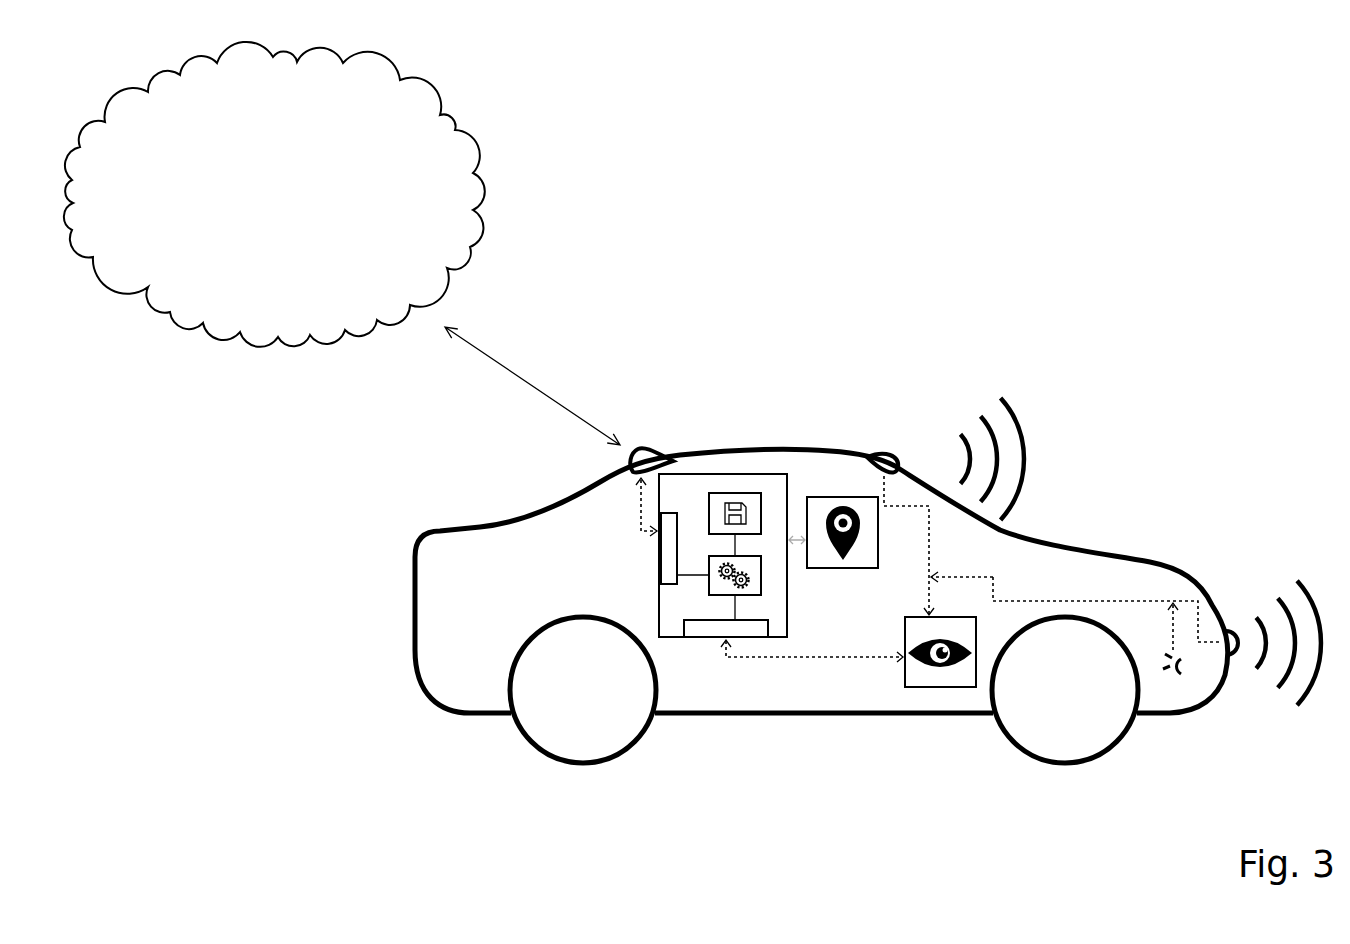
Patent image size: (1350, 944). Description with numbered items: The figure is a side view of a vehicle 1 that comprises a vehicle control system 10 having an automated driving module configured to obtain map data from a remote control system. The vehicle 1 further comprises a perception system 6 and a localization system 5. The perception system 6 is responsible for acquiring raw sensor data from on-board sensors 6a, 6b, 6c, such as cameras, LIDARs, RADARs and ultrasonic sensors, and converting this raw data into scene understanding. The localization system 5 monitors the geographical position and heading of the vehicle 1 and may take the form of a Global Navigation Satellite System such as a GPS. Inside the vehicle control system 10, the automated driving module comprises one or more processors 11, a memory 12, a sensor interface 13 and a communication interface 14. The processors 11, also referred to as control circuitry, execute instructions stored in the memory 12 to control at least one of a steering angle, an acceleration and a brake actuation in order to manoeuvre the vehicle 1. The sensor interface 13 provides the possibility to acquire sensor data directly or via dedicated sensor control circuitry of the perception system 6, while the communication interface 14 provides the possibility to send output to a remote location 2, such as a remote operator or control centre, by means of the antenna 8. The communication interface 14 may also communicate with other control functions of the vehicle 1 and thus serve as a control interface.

The vehicle 1 is at (434, 708).
The remote location 2 is at (418, 84).
The localization system 5 is at (828, 497).
The perception system 6 is at (952, 688).
The sensor 6a is at (1181, 663).
The sensor 6b is at (1230, 633).
The sensor 6c is at (887, 460).
The antenna 8 is at (642, 449).
The vehicle control system 10 is at (712, 472).
The processor 11 is at (762, 582).
The memory 12 is at (735, 492).
The sensor interface 13 is at (710, 632).
The communication interface 14 is at (663, 562).